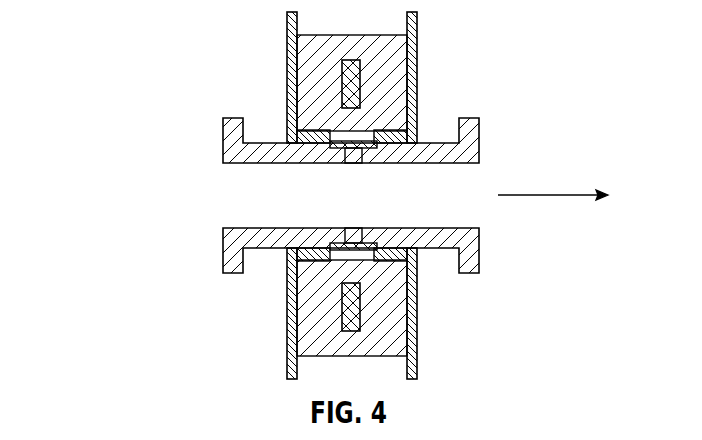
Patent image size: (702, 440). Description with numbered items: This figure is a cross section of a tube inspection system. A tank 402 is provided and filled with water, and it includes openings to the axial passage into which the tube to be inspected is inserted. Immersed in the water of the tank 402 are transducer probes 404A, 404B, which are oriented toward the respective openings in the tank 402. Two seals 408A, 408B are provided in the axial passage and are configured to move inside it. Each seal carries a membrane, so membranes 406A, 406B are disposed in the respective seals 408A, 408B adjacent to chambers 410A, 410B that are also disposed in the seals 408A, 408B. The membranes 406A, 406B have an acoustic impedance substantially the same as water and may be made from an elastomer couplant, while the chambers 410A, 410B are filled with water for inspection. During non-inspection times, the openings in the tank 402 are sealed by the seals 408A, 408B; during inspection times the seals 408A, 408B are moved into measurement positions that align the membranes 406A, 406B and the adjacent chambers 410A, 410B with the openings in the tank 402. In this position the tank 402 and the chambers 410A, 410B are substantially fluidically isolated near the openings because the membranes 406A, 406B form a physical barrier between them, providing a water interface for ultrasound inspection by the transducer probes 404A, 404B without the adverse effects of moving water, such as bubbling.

The tank 402 is at (417, 32).
The transducer probe 404A is at (347, 82).
The transducer probe 404B is at (347, 308).
The membrane 406A is at (358, 143).
The membrane 406B is at (345, 250).
The seal 408A is at (479, 127).
The seal 408B is at (479, 248).
The chamber 410A is at (353, 160).
The chamber 410B is at (347, 232).